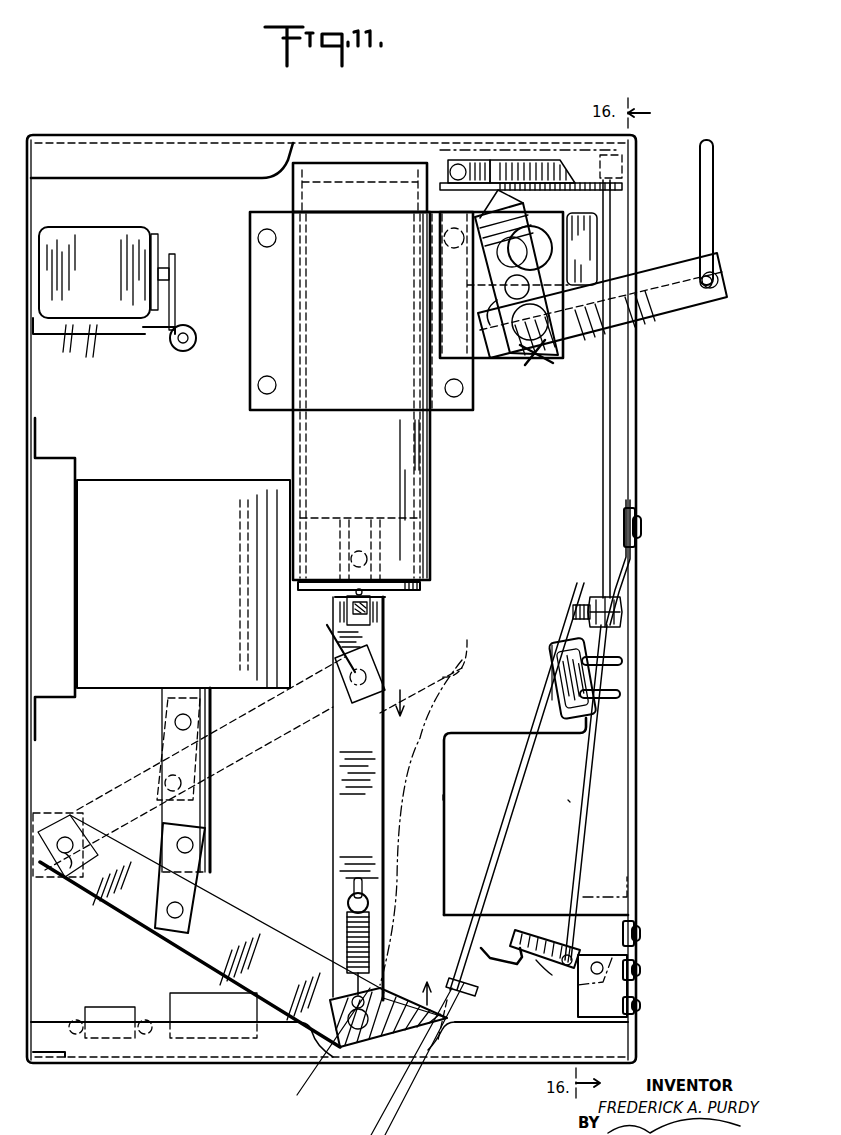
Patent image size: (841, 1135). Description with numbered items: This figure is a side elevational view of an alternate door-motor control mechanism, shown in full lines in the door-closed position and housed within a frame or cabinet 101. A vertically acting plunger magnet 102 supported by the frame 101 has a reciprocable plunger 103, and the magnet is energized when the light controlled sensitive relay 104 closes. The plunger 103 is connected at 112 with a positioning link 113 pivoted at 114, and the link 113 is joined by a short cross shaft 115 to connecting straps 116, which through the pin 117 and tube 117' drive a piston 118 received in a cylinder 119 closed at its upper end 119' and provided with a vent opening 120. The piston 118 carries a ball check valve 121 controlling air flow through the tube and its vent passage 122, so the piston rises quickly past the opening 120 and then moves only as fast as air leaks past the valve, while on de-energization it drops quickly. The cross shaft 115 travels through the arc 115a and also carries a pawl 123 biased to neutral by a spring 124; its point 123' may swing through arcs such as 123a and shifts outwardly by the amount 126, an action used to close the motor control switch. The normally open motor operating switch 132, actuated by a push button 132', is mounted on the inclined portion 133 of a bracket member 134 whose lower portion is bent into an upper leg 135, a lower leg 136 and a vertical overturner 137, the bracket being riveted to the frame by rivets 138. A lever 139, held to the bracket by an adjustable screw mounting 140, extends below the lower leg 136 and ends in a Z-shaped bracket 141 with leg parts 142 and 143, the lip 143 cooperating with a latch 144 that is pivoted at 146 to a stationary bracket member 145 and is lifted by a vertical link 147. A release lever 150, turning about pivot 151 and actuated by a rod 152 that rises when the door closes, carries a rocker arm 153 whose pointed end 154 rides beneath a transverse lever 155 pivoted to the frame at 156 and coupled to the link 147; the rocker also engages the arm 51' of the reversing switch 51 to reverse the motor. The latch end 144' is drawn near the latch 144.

The reversing switch 51 is at (569, 272).
The arm of reversing switch 51' is at (581, 249).
The frame 101 is at (36, 366).
The plunger magnet 102 is at (175, 582).
The plunger 103 is at (210, 845).
The light controlled sensitive relay 104 is at (103, 285).
The connection 112 is at (163, 930).
The positioning link 113 is at (207, 923).
The pivot 114 is at (70, 868).
The cross shaft 115 is at (342, 700).
The arc 115a is at (400, 760).
The connecting straps 116 is at (345, 628).
The pin 117 is at (385, 609).
The tube 117' is at (332, 610).
The piston 118 is at (420, 590).
The cylinder 119 is at (409, 396).
The upper end of cylinder 119' is at (360, 165).
The vent opening 120 is at (425, 440).
The ball check valve 121 is at (358, 550).
The vent passage 122 is at (380, 585).
The pawl 123 is at (392, 834).
The point of pawl 123' is at (437, 840).
The arc 123a is at (450, 975).
The spring 124 is at (347, 923).
The outward shift amount 126 is at (387, 1087).
The motor operating switch 132 is at (619, 678).
The push button 132' is at (532, 664).
The inclined portion of bracket member 133 is at (613, 584).
The bracket member 134 is at (618, 558).
The upper leg 135 is at (500, 730).
The lower leg 136 is at (443, 915).
The overturner 137 is at (443, 795).
The rivets 138 is at (641, 527).
The lever 139 is at (573, 800).
The adjustable screw mounting 140 is at (595, 598).
The Z-shaped bracket 141 is at (517, 966).
The leg part 142 is at (460, 975).
The lip 143 is at (518, 938).
The latch 144 is at (556, 915).
The link end 144' is at (557, 983).
The stationary bracket member 145 is at (610, 990).
The latch pivot 146 is at (603, 968).
The vertical link 147 is at (612, 255).
The lever 150 is at (680, 318).
The pivot 151 is at (515, 372).
The rod 152 is at (713, 218).
The rocker arm 153 is at (490, 324).
The pointed end portion 154 is at (510, 200).
The transverse lever 155 is at (498, 160).
The pivot 156 is at (462, 160).